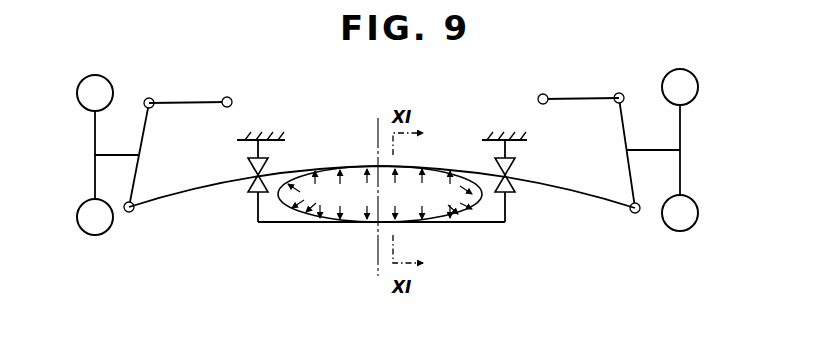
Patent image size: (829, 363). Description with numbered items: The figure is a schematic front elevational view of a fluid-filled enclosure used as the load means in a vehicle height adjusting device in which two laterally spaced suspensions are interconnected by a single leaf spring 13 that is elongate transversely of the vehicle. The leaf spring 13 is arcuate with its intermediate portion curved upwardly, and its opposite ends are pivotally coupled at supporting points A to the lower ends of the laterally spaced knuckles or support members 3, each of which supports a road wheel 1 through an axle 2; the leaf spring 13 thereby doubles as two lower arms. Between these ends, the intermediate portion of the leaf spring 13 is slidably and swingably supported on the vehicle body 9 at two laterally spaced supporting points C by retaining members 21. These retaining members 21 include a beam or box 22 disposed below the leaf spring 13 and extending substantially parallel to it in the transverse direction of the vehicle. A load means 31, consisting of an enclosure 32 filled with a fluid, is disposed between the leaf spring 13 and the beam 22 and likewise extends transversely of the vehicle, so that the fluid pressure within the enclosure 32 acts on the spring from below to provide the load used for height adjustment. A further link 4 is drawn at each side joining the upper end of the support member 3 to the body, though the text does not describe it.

The road wheel 1 is at (83, 79).
The axle 2 is at (125, 154).
The knuckle or support member 3 is at (152, 126).
The link 4 is at (193, 101).
The vehicle body 9 is at (268, 139).
The leaf spring 13 is at (475, 168).
The retaining member 21 is at (253, 193).
The beam or box 22 is at (278, 224).
The load means 31 is at (330, 185).
The enclosure 32 is at (473, 224).
The supporting point A is at (128, 213).
The supporting point C is at (256, 175).